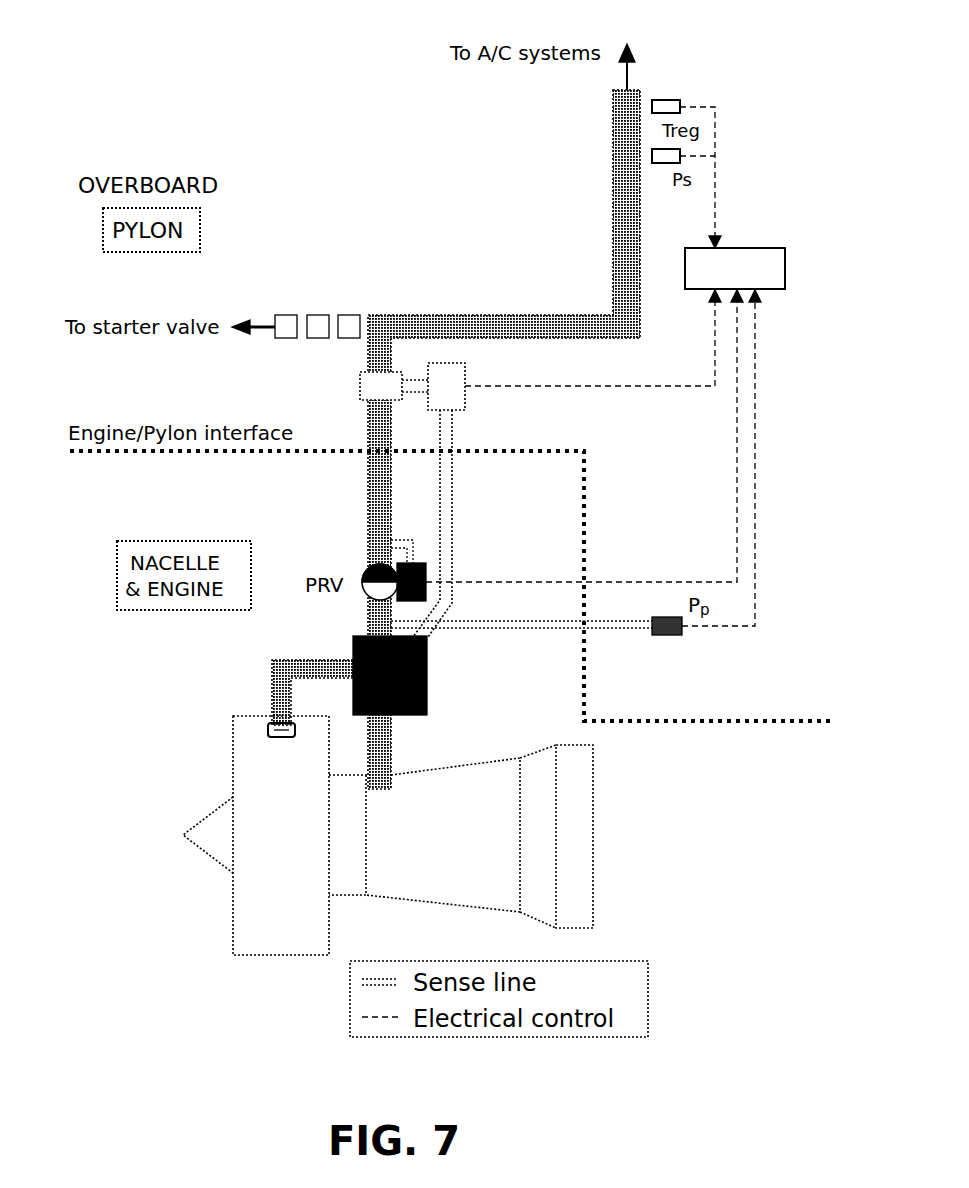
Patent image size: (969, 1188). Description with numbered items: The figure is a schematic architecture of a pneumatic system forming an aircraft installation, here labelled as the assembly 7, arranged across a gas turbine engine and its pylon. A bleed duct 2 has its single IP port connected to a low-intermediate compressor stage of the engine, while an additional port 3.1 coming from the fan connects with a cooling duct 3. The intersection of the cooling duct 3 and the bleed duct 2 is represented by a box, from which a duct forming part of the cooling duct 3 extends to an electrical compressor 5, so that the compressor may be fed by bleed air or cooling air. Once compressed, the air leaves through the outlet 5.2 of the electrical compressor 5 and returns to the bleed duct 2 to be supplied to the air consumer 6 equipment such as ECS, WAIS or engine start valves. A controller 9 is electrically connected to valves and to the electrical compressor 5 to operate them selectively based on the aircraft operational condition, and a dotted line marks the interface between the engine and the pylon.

The bleed duct 2 is at (378, 510).
The cooling duct 3 is at (287, 670).
The additional port 3.1 is at (268, 728).
The electrical compressor 5 is at (446, 375).
The outlet 5.2 is at (377, 383).
The air consumer 6 is at (645, 80).
The bleed air system 7 is at (196, 968).
The controller 9 is at (757, 262).